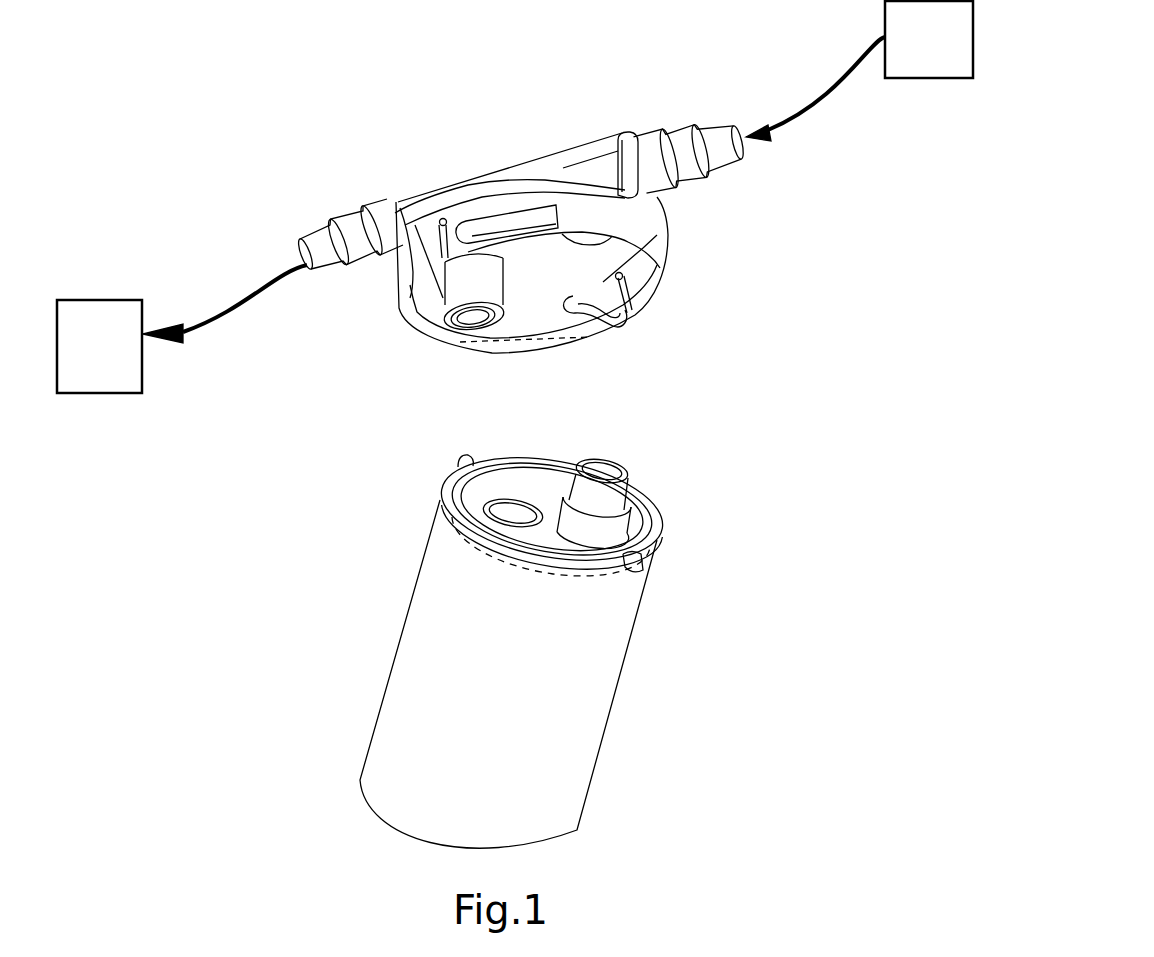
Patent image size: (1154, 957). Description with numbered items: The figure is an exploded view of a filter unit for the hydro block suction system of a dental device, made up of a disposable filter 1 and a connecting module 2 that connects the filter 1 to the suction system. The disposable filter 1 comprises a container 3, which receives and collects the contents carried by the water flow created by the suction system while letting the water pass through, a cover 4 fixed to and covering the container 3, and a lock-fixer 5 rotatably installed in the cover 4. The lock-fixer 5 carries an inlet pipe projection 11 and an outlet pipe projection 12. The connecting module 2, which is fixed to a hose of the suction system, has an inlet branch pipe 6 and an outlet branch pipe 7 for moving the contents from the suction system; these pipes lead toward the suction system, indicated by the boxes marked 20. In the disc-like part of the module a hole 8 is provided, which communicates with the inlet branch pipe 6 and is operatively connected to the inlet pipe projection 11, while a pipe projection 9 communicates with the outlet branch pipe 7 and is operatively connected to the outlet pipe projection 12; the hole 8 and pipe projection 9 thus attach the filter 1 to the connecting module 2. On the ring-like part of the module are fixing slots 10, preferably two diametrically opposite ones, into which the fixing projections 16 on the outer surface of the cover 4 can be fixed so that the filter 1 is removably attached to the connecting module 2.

The disposable filter 1 is at (398, 630).
The connecting module 2 is at (483, 172).
The container 3 is at (570, 735).
The cover 4 is at (657, 518).
The lock-fixer 5 is at (460, 463).
The inlet branch pipe 6 is at (733, 152).
The outlet branch pipe 7 is at (307, 267).
The hole 8 is at (560, 233).
The pipe projection 9 is at (447, 313).
The fixing slots 10 is at (475, 218).
The inlet pipe projection 11 is at (627, 477).
The outlet pipe projection 12 is at (500, 510).
The fixing projections 16 is at (467, 460).
The tubing 20 is at (515, 197).